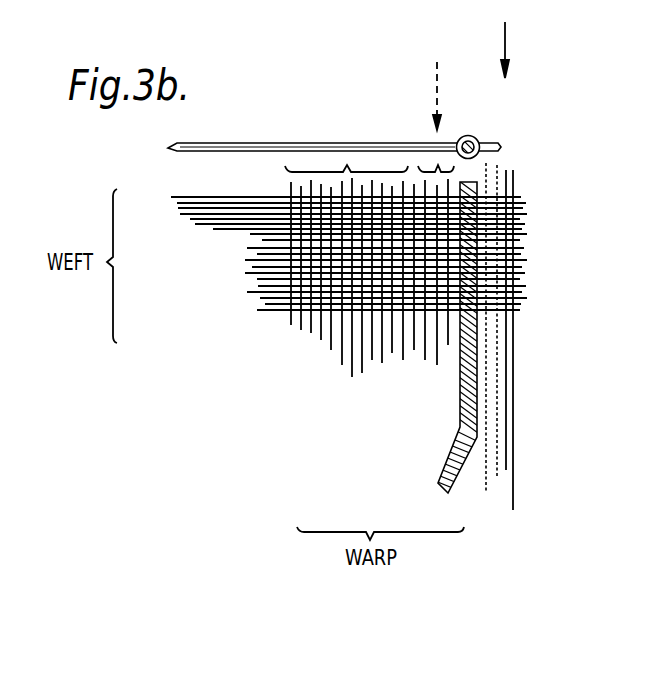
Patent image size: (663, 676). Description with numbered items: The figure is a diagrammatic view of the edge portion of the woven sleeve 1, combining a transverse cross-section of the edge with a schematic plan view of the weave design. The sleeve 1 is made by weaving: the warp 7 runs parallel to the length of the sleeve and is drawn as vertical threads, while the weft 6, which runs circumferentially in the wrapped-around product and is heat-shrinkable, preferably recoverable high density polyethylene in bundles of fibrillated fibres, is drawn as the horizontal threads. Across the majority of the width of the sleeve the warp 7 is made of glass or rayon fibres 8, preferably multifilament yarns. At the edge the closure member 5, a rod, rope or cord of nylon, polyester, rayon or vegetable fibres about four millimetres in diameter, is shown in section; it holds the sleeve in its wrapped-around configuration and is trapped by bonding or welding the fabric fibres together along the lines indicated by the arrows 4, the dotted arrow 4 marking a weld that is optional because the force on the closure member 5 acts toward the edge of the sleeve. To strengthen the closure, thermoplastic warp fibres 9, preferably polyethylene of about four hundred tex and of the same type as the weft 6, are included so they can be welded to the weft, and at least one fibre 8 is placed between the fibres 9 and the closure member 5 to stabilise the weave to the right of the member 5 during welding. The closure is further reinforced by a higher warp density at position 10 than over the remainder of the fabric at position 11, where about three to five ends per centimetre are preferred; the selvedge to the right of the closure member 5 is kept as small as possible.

The sleeve 1 is at (247, 143).
The arrows 4 is at (470, 65).
The closure member 5 is at (477, 138).
The weft 6 is at (212, 231).
The warp 7 is at (331, 347).
The glass or rayon fibres 8 is at (373, 365).
The thermoplastic warp fibres 9 is at (488, 339).
The position of higher warp density 10 is at (438, 164).
The position of normal warp density 11 is at (349, 164).